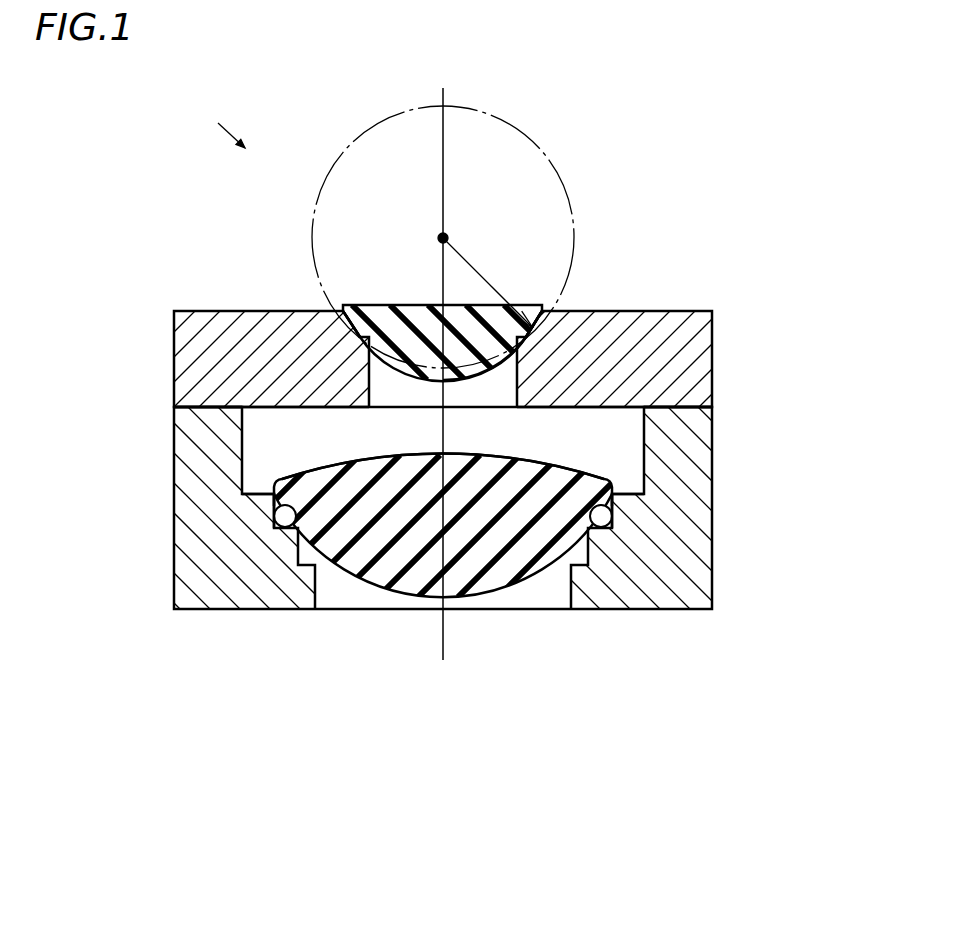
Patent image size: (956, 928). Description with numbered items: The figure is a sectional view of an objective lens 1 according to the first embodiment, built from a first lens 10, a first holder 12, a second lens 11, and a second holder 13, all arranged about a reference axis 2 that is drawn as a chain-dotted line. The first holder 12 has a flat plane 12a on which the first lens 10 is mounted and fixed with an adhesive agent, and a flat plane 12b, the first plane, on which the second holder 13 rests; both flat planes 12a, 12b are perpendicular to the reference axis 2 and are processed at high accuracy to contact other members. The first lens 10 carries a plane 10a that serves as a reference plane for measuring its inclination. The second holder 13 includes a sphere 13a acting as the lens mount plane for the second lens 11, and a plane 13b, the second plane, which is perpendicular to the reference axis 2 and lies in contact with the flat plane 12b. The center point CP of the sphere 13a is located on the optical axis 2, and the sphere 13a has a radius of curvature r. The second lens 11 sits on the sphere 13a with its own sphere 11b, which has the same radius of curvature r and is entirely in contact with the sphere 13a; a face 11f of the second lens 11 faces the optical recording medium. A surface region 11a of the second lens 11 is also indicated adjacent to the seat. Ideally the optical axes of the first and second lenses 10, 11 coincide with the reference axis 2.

The objective lens 1 is at (193, 122).
The reference axis 2 is at (442, 649).
The first lens 10 is at (493, 570).
The plane 10a is at (290, 477).
The second lens 11 is at (412, 318).
The spherical seating surface 11a is at (523, 330).
The sphere 11b is at (535, 312).
The face 11f is at (453, 305).
The first holder 12 is at (662, 570).
The flat plane 12a is at (270, 499).
The flat plane 12b is at (205, 406).
The second holder 13 is at (208, 340).
The sphere 13a is at (356, 336).
The plane 13b is at (188, 410).
The center point CP is at (461, 226).
The radius of curvature r is at (488, 283).